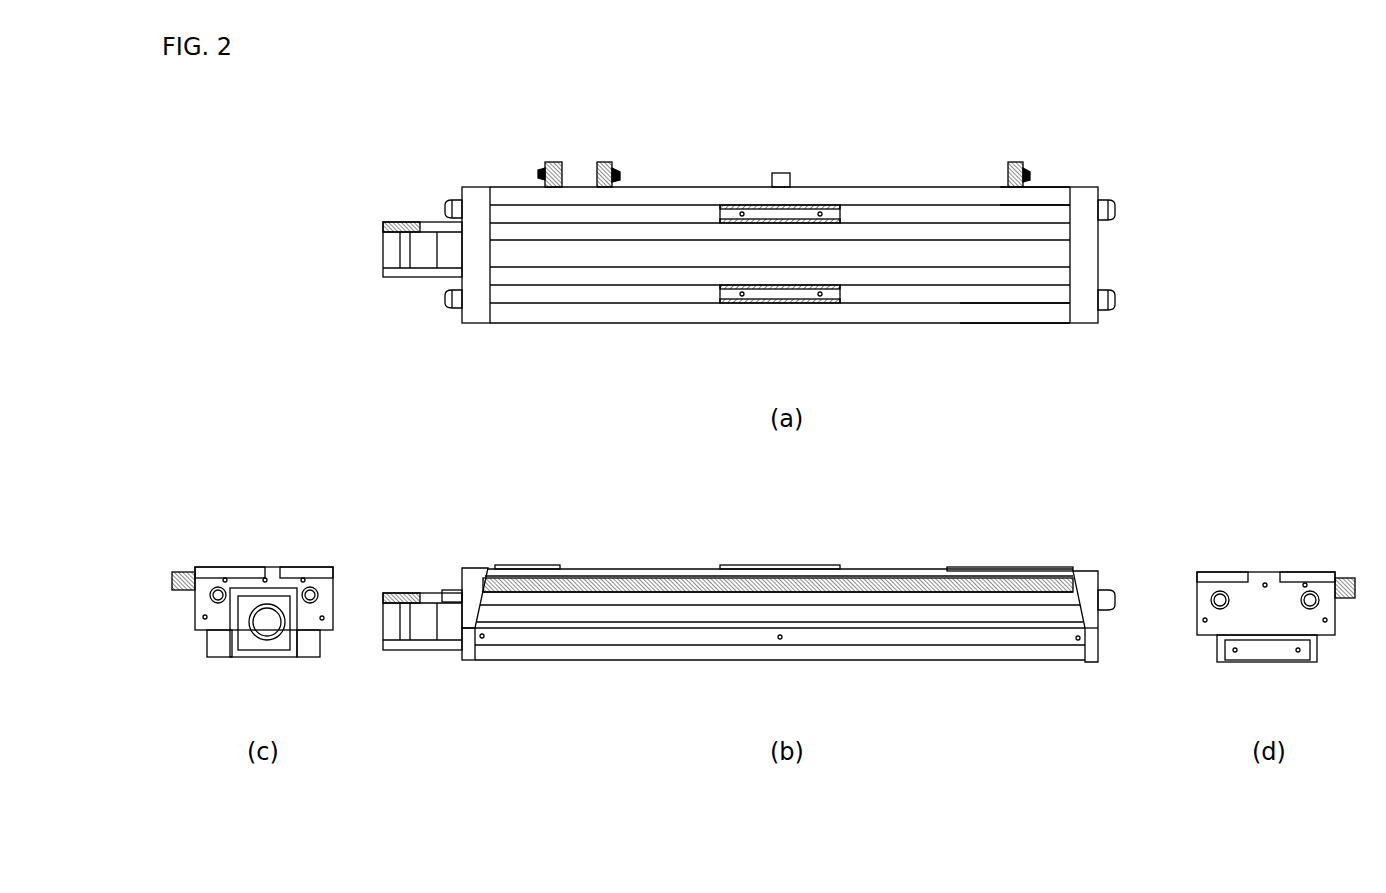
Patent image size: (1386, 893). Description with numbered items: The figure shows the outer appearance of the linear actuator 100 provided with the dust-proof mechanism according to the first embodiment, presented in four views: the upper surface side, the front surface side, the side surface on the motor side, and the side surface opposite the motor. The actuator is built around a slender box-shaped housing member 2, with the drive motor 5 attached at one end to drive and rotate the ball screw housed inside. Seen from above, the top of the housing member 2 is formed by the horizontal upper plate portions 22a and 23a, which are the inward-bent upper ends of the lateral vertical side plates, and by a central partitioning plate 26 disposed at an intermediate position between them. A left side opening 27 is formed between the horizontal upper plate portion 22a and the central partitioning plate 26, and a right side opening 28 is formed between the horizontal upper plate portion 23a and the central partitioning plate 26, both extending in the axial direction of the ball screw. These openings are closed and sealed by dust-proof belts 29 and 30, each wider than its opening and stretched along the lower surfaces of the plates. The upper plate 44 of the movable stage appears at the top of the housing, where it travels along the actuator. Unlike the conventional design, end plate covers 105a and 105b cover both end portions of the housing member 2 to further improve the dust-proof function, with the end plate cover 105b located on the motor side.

The linear actuator 100 is at (1093, 112).
The housing member 2 is at (663, 185).
The drive motor 5 is at (398, 280).
The central partitioning plate 26 is at (582, 240).
The left side opening 27 is at (515, 215).
The right side opening 28 is at (582, 300).
The dust-proof belt 29 is at (905, 222).
The dust-proof belt 30 is at (915, 300).
The upper plate 44 is at (780, 305).
The horizontal upper plate portion 22a is at (1055, 205).
The horizontal upper plate portion 23a is at (1010, 318).
The end plate cover 105a is at (1110, 250).
The end plate cover 105b is at (472, 318).